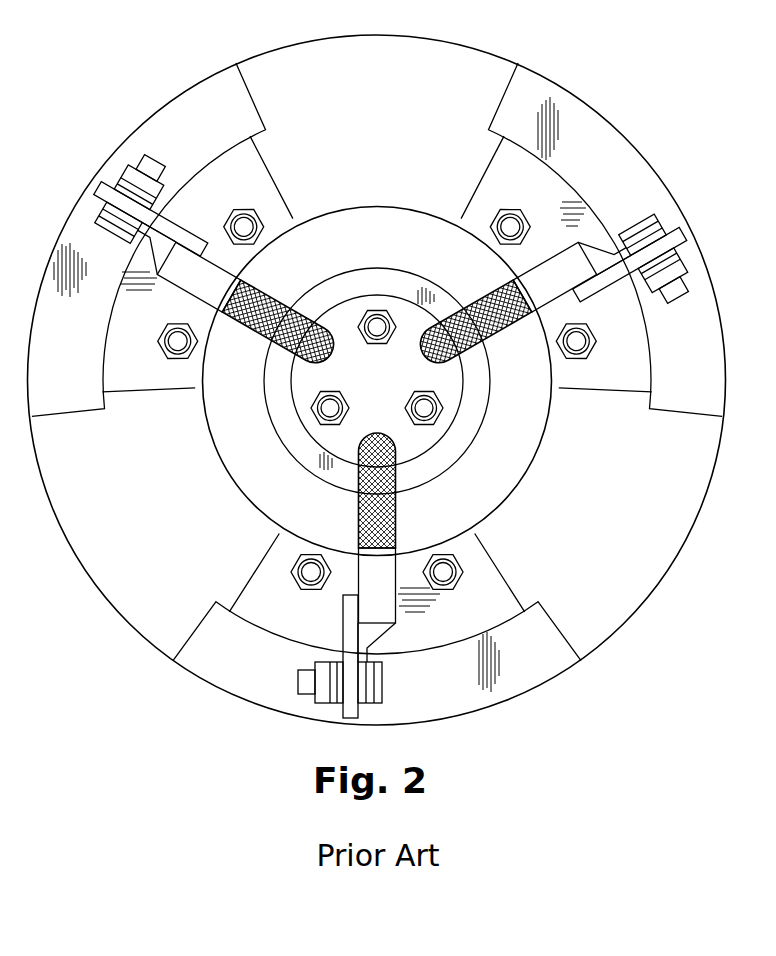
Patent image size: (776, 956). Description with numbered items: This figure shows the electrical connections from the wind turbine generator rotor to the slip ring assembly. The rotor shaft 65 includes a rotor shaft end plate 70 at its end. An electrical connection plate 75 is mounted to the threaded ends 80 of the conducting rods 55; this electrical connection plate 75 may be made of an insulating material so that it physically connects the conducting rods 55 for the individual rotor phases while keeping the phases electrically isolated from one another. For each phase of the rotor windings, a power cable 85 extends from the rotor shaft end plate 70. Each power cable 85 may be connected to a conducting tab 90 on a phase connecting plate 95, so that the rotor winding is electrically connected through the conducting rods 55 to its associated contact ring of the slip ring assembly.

The nut 55 is at (232, 214).
The inner ring 65 is at (482, 423).
The middle plate 70 is at (443, 452).
The outer ring 75 is at (684, 506).
The tab 80 is at (266, 212).
The gripping arm 85 is at (288, 300).
The clamp bar 90 is at (183, 230).
The pad segment 95 is at (135, 333).